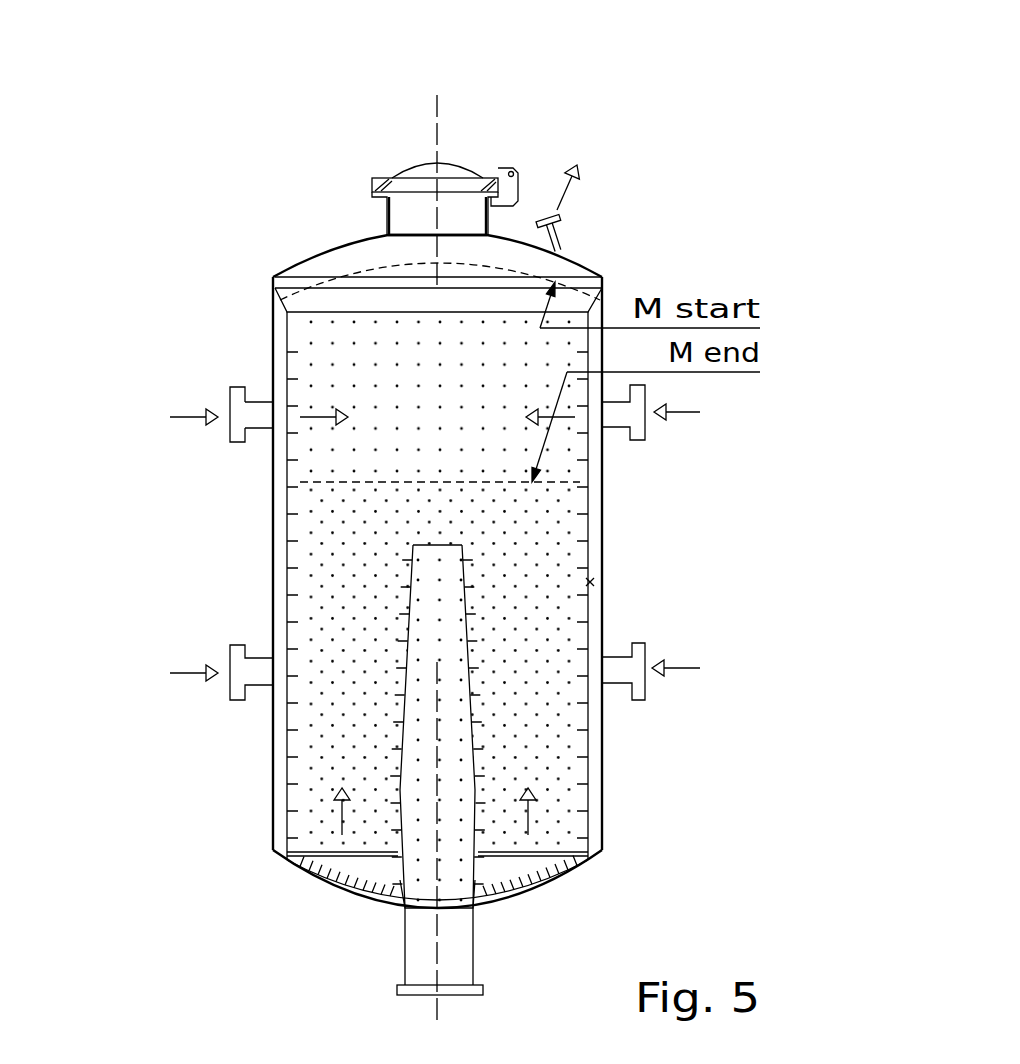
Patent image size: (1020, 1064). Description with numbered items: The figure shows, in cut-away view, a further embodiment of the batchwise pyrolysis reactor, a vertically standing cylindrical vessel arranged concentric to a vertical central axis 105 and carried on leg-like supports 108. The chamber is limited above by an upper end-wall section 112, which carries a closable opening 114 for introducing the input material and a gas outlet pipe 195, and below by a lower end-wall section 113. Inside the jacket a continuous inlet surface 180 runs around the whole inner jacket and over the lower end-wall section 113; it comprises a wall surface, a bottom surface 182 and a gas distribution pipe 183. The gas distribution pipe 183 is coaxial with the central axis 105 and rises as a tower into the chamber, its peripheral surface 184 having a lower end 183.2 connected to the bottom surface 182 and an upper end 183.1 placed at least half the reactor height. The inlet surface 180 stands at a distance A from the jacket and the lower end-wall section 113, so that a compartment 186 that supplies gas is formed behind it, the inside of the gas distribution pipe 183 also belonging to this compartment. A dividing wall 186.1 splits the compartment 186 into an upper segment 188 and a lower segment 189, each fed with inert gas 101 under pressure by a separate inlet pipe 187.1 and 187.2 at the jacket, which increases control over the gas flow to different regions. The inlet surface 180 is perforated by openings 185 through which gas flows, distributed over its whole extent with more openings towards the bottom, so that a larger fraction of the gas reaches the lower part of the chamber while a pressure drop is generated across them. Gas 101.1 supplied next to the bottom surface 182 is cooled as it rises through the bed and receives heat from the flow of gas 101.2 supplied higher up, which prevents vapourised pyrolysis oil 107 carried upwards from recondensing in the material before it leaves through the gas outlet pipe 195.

The central axis 105 is at (438, 112).
The vapourised pyrolysis oil 107 is at (583, 165).
The opening that can be closed 114 is at (363, 202).
The upper end-wall section 112 is at (311, 254).
The gas outlet pipe 195 is at (553, 239).
The compartment that supplies gas 186 is at (279, 372).
The gas 101 is at (437, 542).
The inlet pipe 187.1 is at (237, 432).
The continuous inlet surface 180 is at (287, 517).
The openings through which gas flows 185 is at (336, 555).
The upper end of the gas distribution pipe 183.1 is at (438, 545).
The gas distribution pipe 183 is at (408, 632).
The inlet pipe 187.2 is at (238, 690).
The peripheral surface 184 is at (407, 702).
The bottom surface 182 is at (305, 863).
The lower end-wall section 113 is at (320, 890).
The lower end of the gas distribution pipe 183.2 is at (396, 903).
The leg-like supports 108 is at (458, 948).
The upper segment 188 is at (597, 558).
The distance A is at (603, 583).
The dividing wall 186.1 is at (597, 600).
The flow of gas supplied higher up 101.2 is at (555, 420).
The gas supplied next to the bottom surface 101.1 is at (540, 827).
The lower segment 189 is at (598, 772).